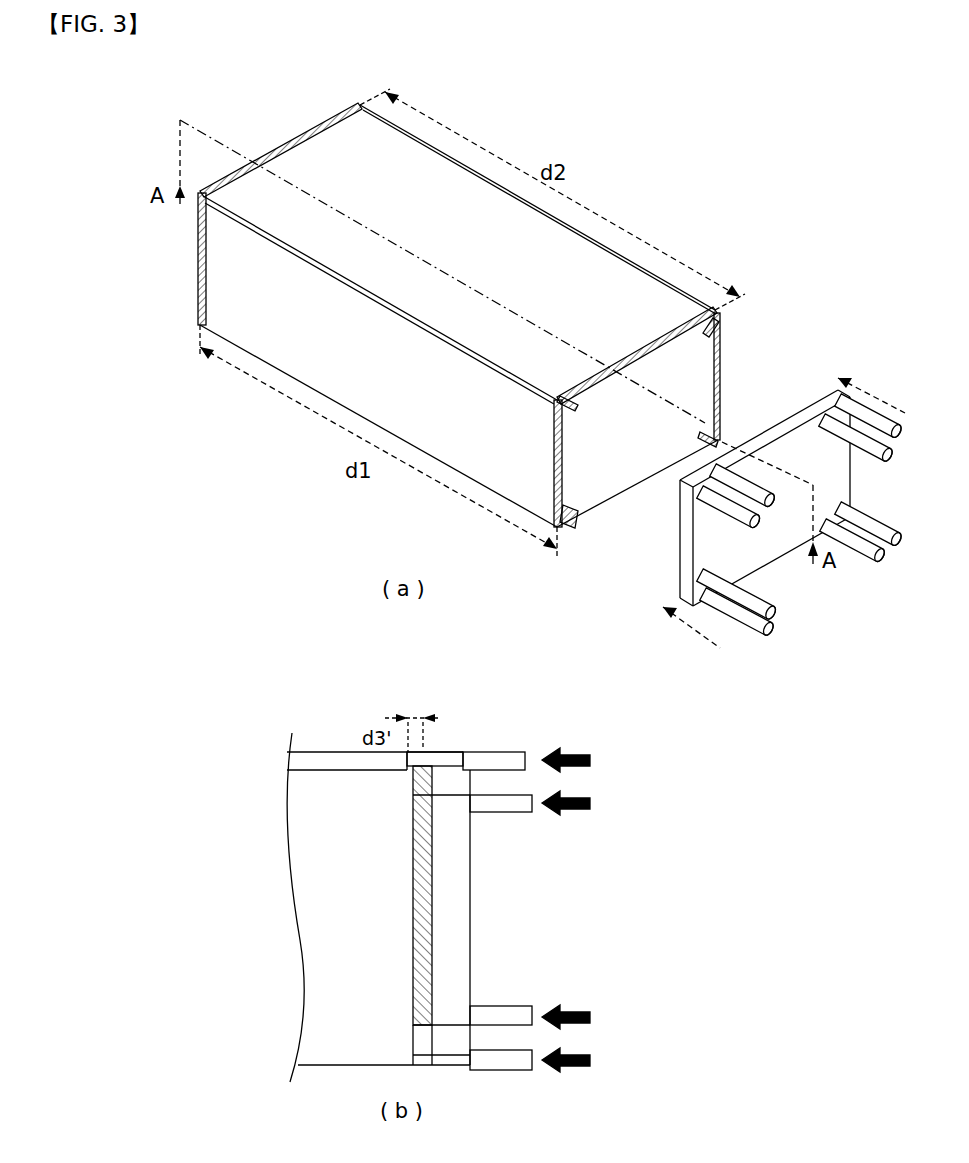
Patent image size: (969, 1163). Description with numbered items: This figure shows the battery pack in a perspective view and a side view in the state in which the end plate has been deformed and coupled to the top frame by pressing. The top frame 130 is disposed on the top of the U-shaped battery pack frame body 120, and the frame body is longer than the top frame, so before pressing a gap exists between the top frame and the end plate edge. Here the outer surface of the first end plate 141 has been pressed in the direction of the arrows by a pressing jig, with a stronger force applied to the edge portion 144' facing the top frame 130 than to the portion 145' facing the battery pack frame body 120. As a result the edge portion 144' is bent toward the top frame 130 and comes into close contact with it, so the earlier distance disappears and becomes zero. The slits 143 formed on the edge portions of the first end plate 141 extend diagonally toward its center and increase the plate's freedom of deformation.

The battery pack frame body 120 is at (246, 292).
The top frame 130 is at (296, 149).
The first end plate 141 is at (698, 387).
The slits 143 is at (722, 326).
The edge portion 144' is at (610, 533).
The portion facing the battery pack frame body 145' is at (600, 544).